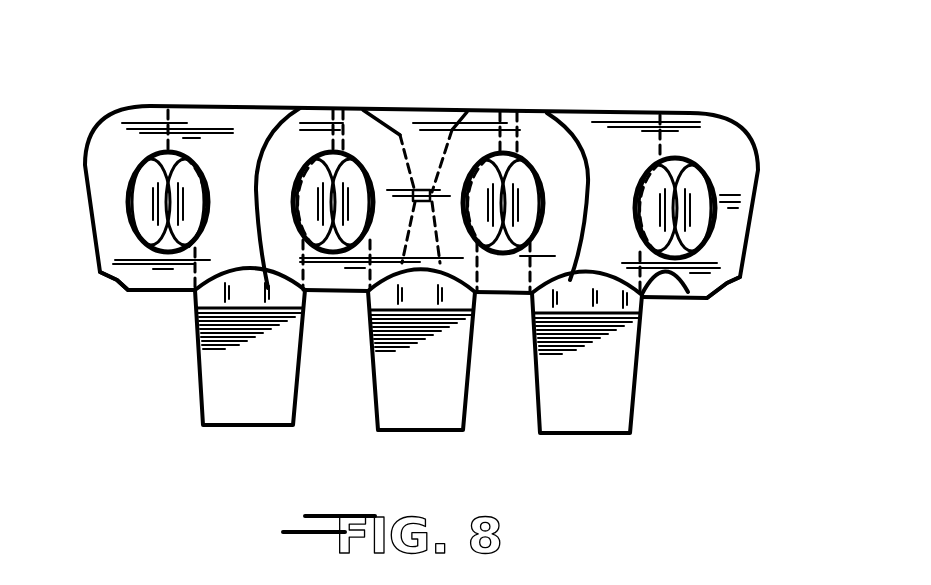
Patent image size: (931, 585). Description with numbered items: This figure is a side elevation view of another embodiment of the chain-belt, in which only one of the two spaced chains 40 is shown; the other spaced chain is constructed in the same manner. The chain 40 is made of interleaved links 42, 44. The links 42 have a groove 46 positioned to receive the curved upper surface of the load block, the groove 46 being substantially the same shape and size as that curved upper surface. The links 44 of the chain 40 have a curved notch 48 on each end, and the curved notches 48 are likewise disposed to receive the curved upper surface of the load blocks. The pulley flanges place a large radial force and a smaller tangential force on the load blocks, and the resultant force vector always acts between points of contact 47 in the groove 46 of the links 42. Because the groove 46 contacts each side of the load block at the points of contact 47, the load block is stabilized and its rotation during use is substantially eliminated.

The spaced chain 40 is at (421, 88).
The link 42 is at (615, 110).
The link 44 is at (190, 107).
The groove 46 is at (598, 272).
The points of contact 47 is at (543, 273).
The curved notch 48 is at (112, 282).